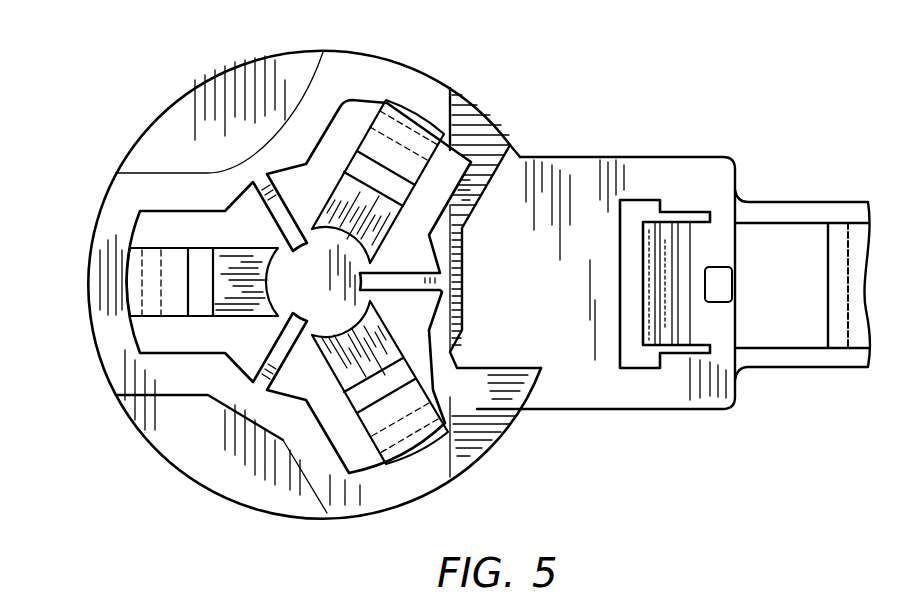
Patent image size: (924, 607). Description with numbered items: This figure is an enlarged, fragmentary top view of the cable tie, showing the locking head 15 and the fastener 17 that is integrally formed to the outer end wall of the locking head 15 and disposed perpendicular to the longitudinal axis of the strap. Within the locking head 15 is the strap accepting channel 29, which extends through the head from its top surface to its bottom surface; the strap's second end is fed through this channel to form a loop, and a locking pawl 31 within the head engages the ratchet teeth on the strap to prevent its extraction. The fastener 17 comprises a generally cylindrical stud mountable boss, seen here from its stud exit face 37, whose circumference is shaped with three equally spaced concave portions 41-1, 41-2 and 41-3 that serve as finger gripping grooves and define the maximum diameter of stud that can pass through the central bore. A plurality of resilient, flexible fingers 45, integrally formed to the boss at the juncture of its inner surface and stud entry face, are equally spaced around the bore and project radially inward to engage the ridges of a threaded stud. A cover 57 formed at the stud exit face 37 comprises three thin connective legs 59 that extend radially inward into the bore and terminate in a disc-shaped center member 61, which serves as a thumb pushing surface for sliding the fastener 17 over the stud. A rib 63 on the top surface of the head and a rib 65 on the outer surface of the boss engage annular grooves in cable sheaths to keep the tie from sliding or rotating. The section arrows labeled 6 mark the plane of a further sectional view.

The section line 6- 6 is at (107, 281).
The locking head 15 is at (638, 426).
The fastener 17 is at (120, 475).
The strap accepting channel 29 is at (632, 214).
The locking pawl 31 is at (653, 250).
The stud exit face 37 is at (360, 70).
The concave portion 41-1 is at (250, 173).
The concave portion 41-2 is at (207, 398).
The concave portion 41-3 is at (442, 243).
The resilient flexible finger 45 is at (173, 235).
The cover 57 is at (266, 328).
The connective leg 59 is at (282, 215).
The center member 61 is at (305, 293).
The rib 63 is at (722, 296).
The rib 65 is at (531, 380).